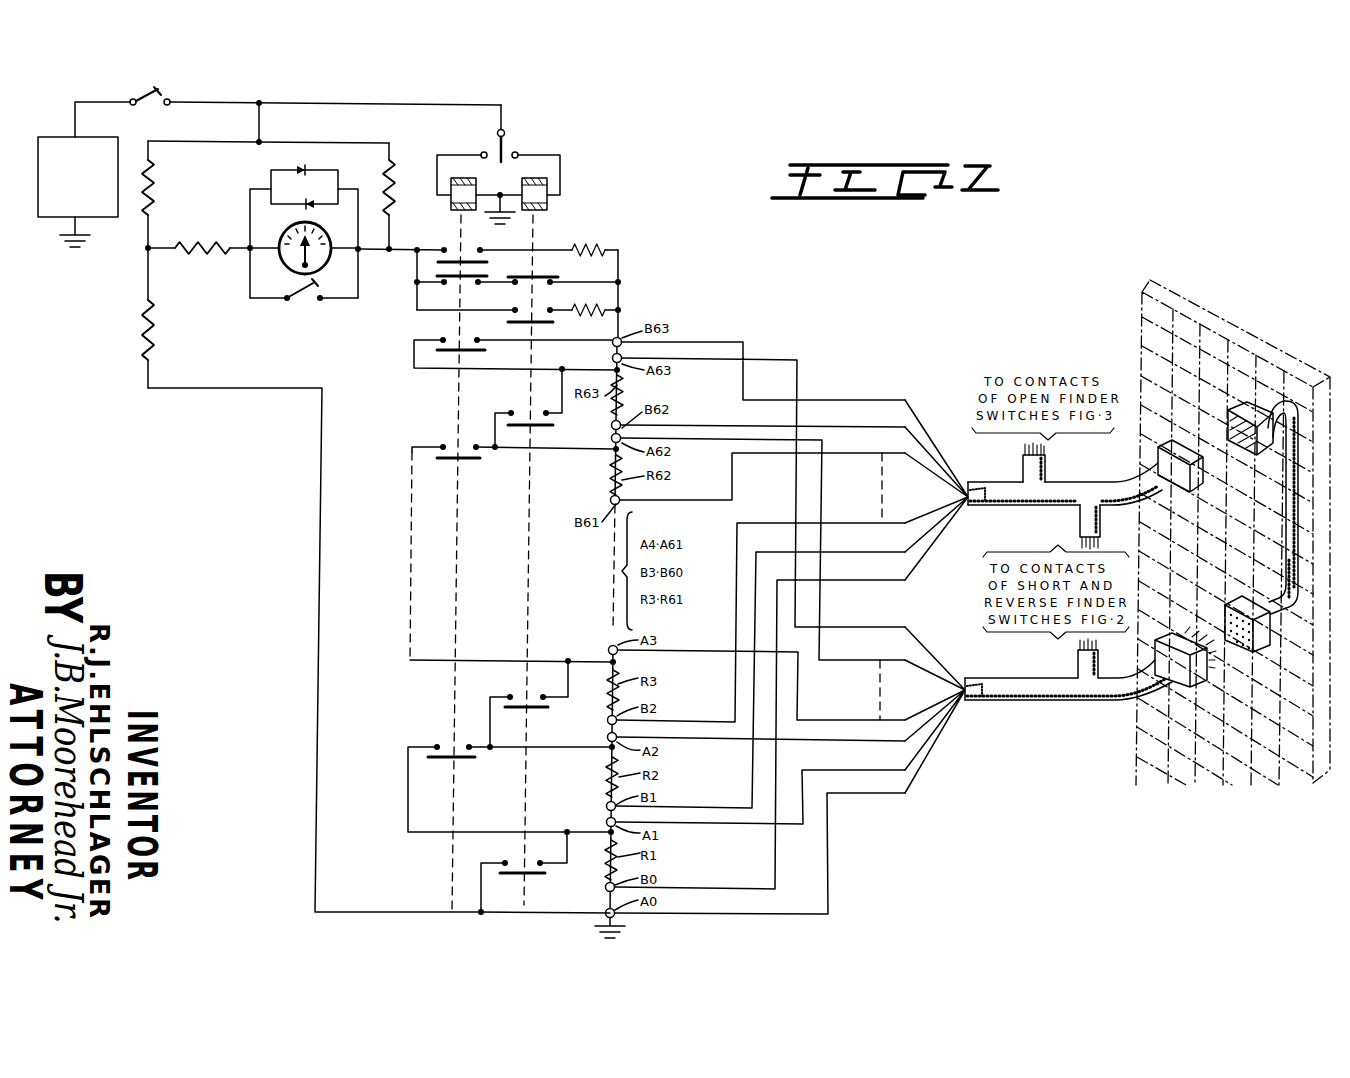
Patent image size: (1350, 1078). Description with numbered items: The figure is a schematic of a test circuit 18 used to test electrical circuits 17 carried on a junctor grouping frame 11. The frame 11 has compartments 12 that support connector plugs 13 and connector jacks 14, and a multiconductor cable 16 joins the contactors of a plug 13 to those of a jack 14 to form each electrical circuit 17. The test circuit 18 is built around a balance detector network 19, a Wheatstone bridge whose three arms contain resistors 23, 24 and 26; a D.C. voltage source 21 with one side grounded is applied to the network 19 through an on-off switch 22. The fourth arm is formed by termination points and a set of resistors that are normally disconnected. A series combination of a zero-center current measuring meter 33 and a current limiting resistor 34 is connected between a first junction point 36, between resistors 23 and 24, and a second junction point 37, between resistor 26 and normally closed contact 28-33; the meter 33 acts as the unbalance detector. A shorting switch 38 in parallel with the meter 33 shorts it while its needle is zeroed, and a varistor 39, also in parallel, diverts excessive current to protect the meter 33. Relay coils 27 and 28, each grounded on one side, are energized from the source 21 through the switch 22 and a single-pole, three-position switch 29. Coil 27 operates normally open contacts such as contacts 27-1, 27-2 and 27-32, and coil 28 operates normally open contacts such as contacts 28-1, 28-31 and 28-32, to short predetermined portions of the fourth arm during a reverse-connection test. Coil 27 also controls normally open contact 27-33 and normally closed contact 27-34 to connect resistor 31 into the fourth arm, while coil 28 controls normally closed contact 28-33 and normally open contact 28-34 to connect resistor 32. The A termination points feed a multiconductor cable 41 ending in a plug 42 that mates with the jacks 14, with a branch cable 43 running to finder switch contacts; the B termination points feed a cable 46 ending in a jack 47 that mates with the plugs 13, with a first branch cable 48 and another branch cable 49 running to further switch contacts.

The junctor grouping frame 11 is at (1262, 334).
The compartment 12 is at (1155, 314).
The connector plug 13 is at (1244, 410).
The connector jack 14 is at (1262, 644).
The multiconductor cable 16 is at (1285, 567).
The electrical circuit 17 is at (1284, 523).
The test circuit 18 is at (786, 288).
The balance detector network 19 is at (292, 486).
The D.C. voltage source 21 is at (56, 137).
The on-off switch 22 is at (178, 96).
The resistor 23 is at (146, 352).
The resistor 24 is at (156, 192).
The resistor 26 is at (395, 180).
The relay coil 27 is at (548, 202).
The relay coil 28 is at (450, 200).
The single-pole, three-position switch 29 is at (505, 128).
The resistor 31 is at (600, 310).
The resistor 32 is at (597, 249).
The zero-center, current measuring meter 33 is at (283, 270).
The current limiting resistor 34 is at (196, 240).
The first junction point 36 is at (146, 252).
The second junction point 37 is at (389, 254).
The shorting switch 38 is at (304, 305).
The varistor 39 is at (317, 167).
The multiconductor cable 41 is at (1060, 704).
The plug 42 is at (1190, 688).
The branch cable 43 is at (1076, 664).
The multiconductor cable 46 is at (1080, 487).
The jack 47 is at (1176, 448).
The first branch cable 48 is at (1078, 529).
The branch cable 49 is at (1020, 467).
The normally open contact 28-34 is at (456, 250).
The normally closed contact 28-33 is at (454, 284).
The normally closed contact 27-34 is at (544, 279).
The normally open contact 27-33 is at (545, 323).
The normally open contact 28-32 is at (468, 350).
The normally open contact 27-32 is at (544, 427).
The normally open contact 28-31 is at (466, 472).
The normally open contact 27-2 is at (536, 712).
The normally open contact 28-1 is at (462, 762).
The normally open contact 27-1 is at (523, 878).